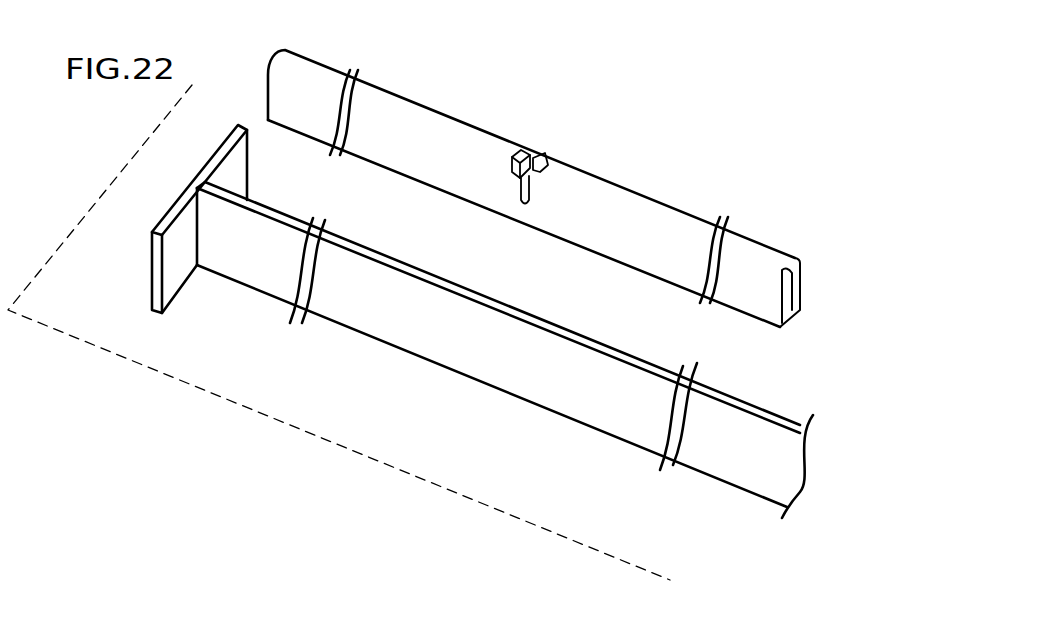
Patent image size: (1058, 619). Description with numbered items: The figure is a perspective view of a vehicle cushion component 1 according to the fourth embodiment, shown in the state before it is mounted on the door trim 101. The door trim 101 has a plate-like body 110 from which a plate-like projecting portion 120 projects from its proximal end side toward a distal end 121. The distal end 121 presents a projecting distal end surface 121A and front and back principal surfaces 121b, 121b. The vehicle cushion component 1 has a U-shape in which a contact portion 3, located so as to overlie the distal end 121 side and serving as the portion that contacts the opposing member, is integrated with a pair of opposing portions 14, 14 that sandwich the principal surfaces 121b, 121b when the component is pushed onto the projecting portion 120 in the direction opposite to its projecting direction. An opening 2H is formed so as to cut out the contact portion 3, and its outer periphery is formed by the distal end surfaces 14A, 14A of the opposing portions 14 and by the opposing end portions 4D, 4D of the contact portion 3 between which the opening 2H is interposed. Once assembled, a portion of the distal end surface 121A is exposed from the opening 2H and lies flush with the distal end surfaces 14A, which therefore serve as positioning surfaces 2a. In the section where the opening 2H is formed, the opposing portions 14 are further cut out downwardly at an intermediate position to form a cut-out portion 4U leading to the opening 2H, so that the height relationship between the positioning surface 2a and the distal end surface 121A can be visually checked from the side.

The vehicle cushion component 1 is at (724, 187).
The contact portion 3 is at (672, 200).
The opposing portion 14 is at (795, 324).
The positioning surface 2a is at (572, 130).
The distal end surface 14A is at (533, 152).
The opposing end portion 4D is at (505, 152).
The cut-out portion 4U is at (532, 192).
The opening 2H is at (553, 148).
The door trim 101 is at (462, 500).
The body 110 is at (375, 414).
The projecting portion 120 is at (735, 478).
The distal end 121 is at (638, 356).
The projecting distal end surface 121A is at (388, 263).
The principal surface 121b is at (462, 290).